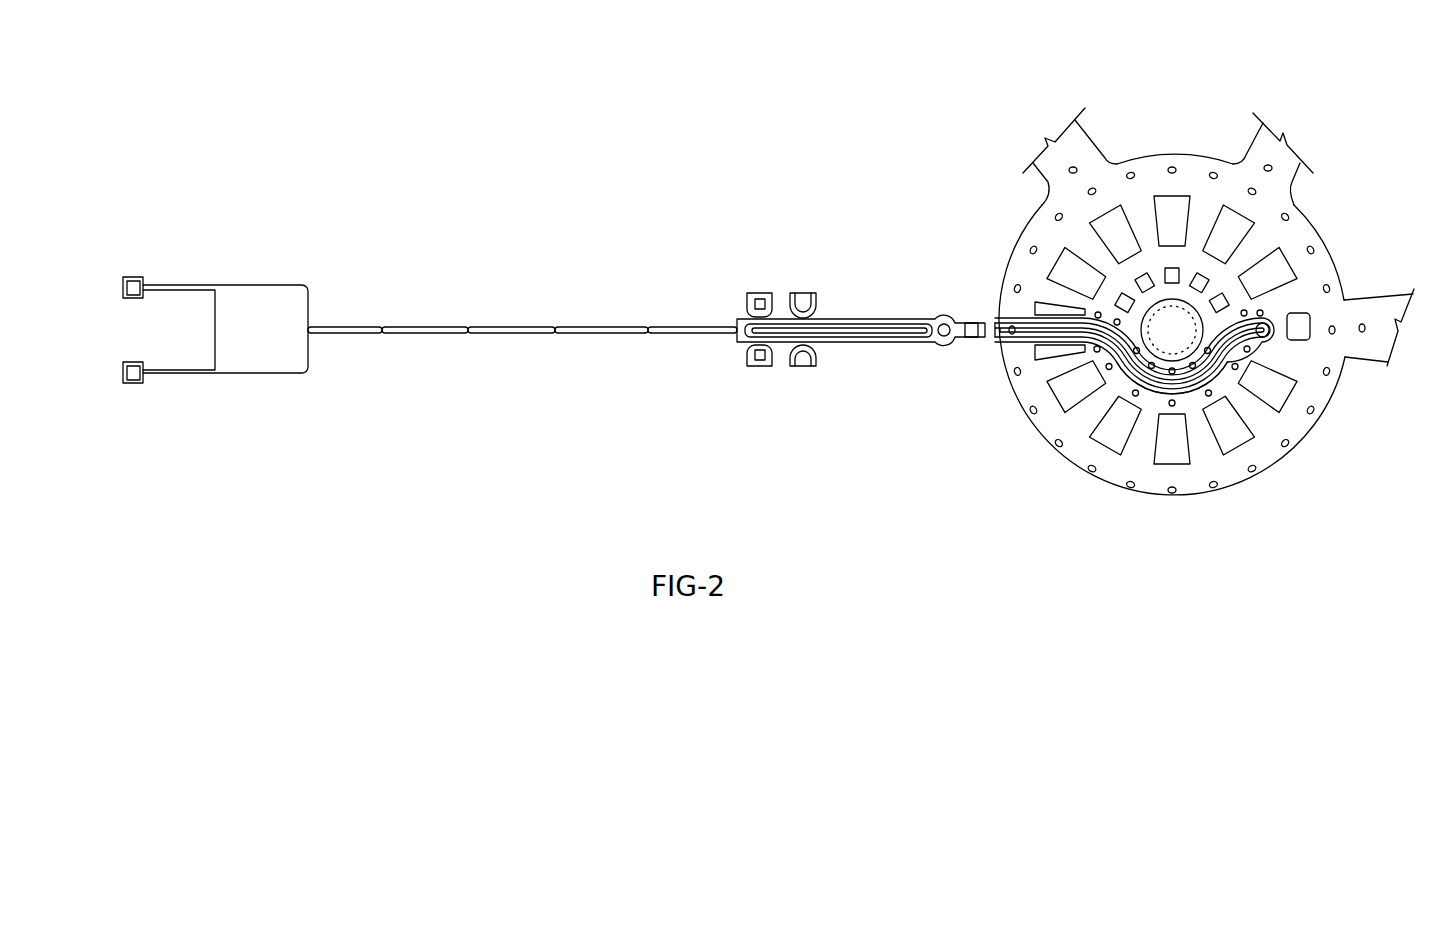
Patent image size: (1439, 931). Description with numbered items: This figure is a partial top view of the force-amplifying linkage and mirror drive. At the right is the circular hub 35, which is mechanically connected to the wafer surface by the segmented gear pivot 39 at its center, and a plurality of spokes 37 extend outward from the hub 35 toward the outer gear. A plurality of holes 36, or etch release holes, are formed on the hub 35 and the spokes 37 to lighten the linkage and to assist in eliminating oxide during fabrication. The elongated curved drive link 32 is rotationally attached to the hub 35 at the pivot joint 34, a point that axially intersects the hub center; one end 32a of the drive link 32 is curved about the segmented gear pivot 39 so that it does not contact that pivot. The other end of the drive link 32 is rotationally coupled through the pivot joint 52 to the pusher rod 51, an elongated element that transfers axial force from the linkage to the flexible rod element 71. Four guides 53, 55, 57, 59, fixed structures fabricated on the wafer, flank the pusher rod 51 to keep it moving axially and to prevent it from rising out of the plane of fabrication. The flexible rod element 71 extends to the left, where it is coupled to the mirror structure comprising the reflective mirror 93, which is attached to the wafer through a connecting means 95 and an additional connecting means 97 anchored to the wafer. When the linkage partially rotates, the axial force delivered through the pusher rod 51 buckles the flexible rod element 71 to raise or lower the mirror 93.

The elongated curved drive link 32 is at (1018, 312).
The curved end of drive link 32a is at (1185, 395).
The pivot joint 34 is at (1273, 339).
The circular hub 35 is at (1320, 437).
The holes 36 is at (1292, 216).
The spokes 37 is at (1087, 136).
The segmented gear pivot 39 is at (1178, 300).
The pusher rod 51 is at (880, 316).
The pivot joint 52 is at (940, 338).
The guide 53 is at (755, 296).
The guide 55 is at (798, 294).
The guide 57 is at (752, 365).
The guide 59 is at (797, 365).
The flexible rod element 71 is at (490, 318).
The reflective mirror 93 is at (283, 275).
The connecting means 95 is at (176, 284).
The additional connecting means 97 is at (178, 384).